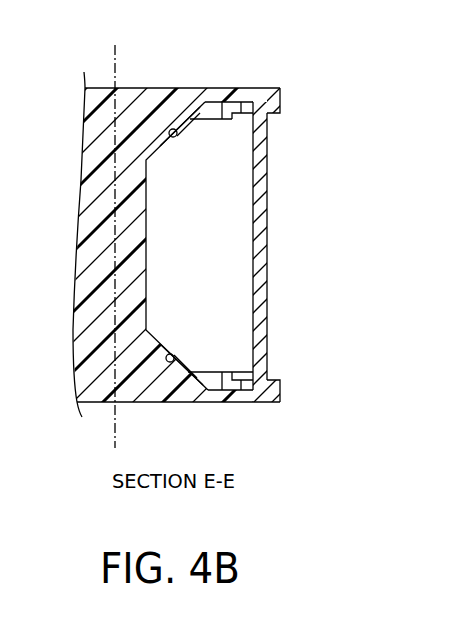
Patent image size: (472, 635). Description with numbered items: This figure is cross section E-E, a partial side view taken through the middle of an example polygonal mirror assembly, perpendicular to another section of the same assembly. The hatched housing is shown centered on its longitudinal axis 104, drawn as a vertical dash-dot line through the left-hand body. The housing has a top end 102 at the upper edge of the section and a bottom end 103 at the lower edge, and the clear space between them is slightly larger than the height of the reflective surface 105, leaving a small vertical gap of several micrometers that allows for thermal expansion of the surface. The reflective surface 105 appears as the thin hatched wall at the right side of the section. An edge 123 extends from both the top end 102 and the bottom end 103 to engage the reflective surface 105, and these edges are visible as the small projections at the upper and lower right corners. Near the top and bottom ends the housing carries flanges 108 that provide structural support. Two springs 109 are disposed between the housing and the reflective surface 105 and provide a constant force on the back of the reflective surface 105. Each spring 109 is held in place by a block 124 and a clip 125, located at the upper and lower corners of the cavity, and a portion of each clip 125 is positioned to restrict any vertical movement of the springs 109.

The top end 102 is at (246, 88).
The bottom end 103 is at (245, 403).
The longitudinal axis 104 is at (115, 62).
The reflective surface 105 is at (267, 240).
The flange 108 is at (175, 128).
The spring 109 is at (247, 112).
The edge 123 is at (280, 100).
The block 124 is at (186, 123).
The clip 125 is at (221, 121).